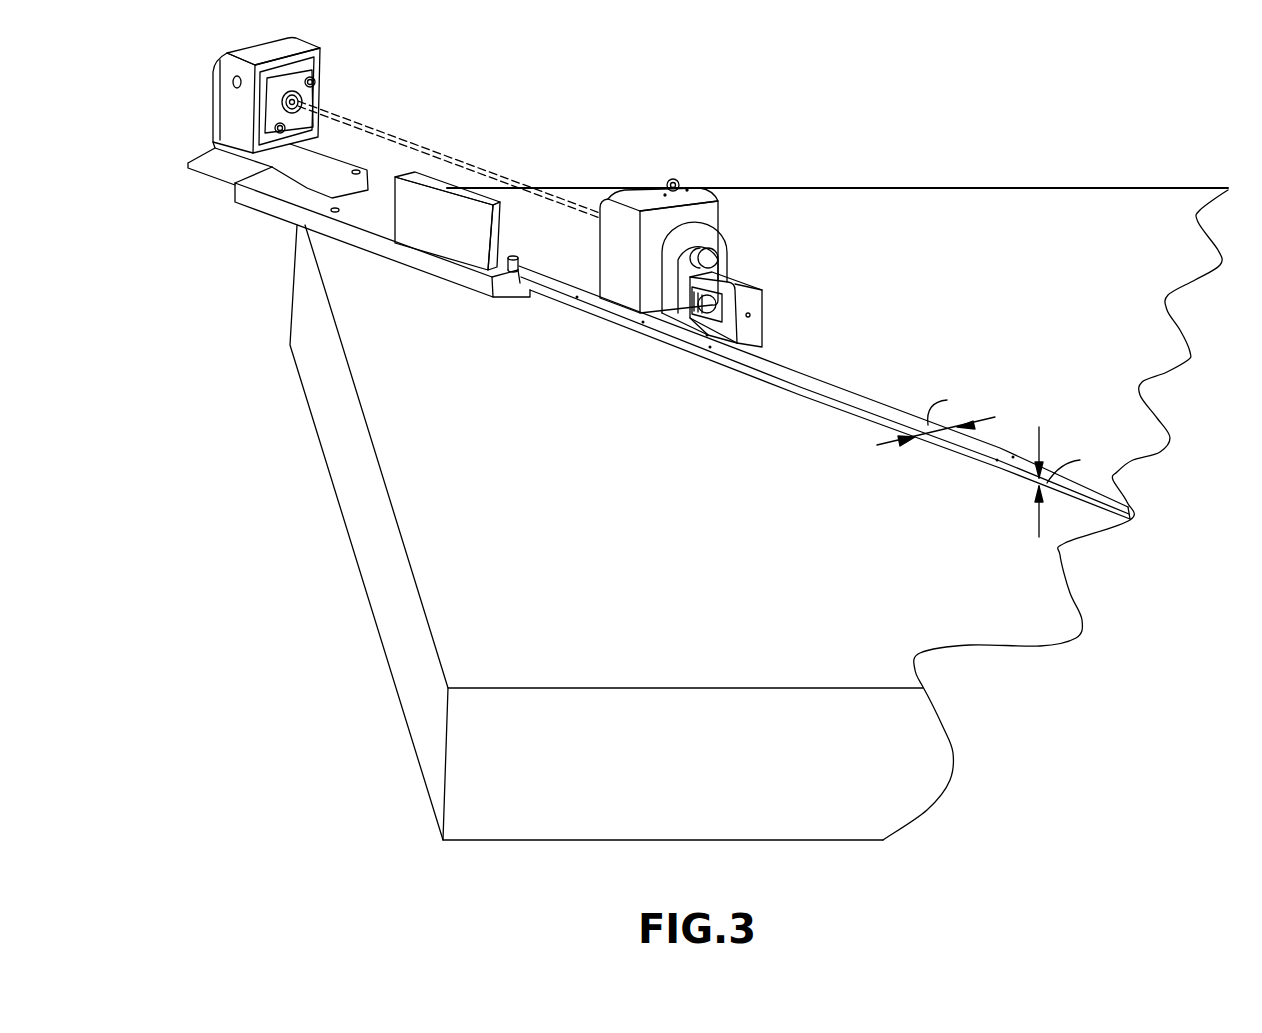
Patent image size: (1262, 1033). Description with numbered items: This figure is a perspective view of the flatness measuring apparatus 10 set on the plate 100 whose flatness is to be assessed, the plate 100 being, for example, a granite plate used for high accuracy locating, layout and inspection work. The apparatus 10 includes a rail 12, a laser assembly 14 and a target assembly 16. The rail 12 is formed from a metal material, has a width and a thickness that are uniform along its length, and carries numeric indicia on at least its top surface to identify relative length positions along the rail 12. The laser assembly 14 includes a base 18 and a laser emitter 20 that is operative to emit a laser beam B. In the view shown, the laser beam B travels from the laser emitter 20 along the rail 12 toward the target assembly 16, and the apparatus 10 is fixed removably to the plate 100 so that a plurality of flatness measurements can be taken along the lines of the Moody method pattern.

The apparatus 10 is at (558, 123).
The rail 12 is at (822, 383).
The laser assembly 14 is at (208, 195).
The target assembly 16 is at (683, 183).
The base 18 is at (443, 273).
The laser emitter 20 is at (238, 58).
The plate 100 is at (1013, 192).
The laser beam B is at (436, 156).